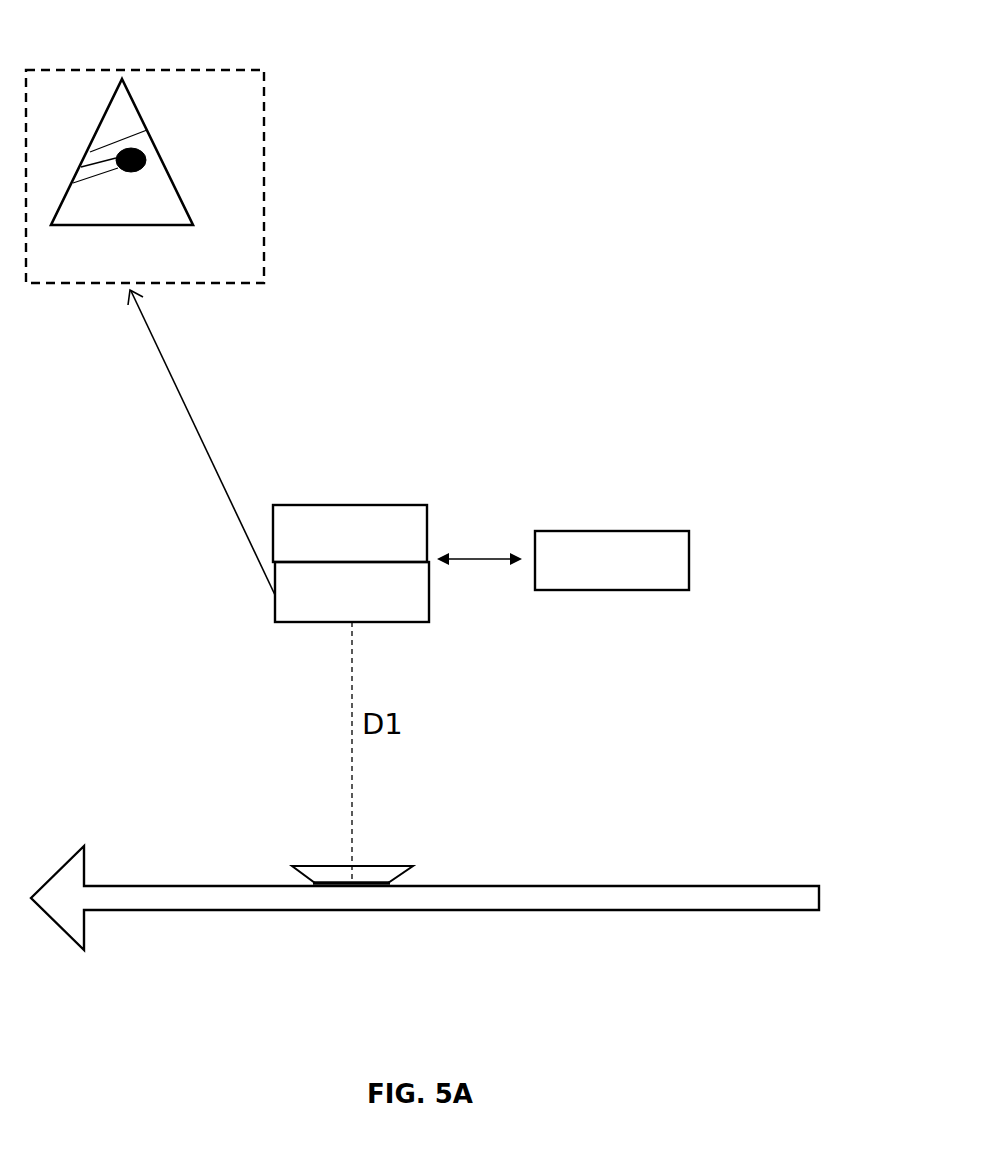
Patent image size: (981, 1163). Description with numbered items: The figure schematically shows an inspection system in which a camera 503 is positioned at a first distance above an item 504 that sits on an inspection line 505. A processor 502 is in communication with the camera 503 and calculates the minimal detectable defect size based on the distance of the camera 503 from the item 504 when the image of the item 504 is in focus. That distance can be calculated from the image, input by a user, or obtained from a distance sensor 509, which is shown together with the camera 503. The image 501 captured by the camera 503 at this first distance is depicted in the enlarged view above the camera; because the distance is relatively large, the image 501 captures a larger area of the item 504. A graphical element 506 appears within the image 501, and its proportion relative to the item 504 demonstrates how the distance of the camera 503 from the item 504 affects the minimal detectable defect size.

The image 501 is at (268, 224).
The processor 502 is at (643, 578).
The camera 503 is at (383, 610).
The item 504 is at (167, 193).
The inspection line 505 is at (276, 898).
The graphical element 506 is at (145, 157).
The distance sensor 509 is at (381, 552).